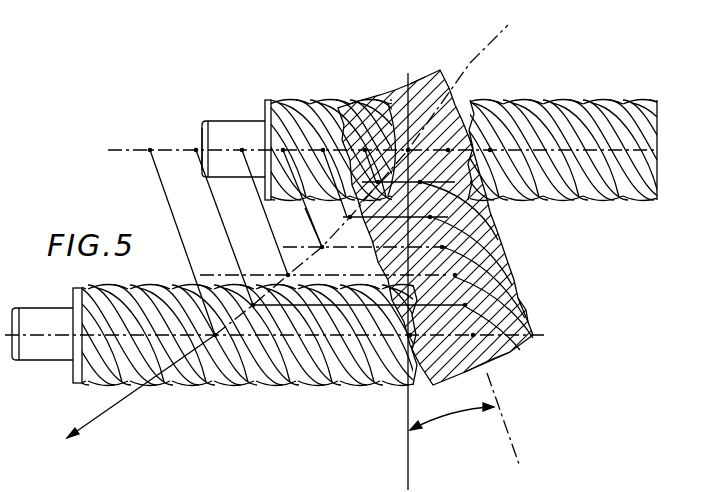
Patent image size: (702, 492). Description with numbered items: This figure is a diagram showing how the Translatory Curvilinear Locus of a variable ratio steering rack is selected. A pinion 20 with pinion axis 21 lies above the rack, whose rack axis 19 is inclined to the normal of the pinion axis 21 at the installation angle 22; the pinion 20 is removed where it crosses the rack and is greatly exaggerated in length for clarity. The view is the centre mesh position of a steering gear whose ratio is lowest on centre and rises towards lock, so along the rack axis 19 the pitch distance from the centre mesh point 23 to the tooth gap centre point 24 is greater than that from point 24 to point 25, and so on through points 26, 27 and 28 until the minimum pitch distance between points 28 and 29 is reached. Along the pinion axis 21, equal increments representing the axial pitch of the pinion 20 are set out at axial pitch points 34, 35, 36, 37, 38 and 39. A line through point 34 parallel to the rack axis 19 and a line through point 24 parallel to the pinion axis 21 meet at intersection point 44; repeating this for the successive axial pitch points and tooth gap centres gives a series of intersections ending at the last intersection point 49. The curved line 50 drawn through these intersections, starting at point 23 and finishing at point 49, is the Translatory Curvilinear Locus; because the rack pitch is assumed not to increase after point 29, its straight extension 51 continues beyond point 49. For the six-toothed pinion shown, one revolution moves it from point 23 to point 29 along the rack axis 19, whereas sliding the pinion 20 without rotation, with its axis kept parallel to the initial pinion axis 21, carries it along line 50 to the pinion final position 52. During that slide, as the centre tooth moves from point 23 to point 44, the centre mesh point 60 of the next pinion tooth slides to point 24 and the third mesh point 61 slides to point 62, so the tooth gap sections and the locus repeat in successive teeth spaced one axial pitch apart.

The rack axis 19 is at (507, 422).
The pinion 20 is at (542, 121).
The pinion axis 21 is at (312, 117).
The installation angle 22 is at (457, 424).
The centre mesh point 23 is at (361, 208).
The tooth gap centre point 24 is at (500, 228).
The tooth gap centre point 25 is at (505, 248).
The tooth gap centre point 26 is at (515, 275).
The tooth gap centre point 27 is at (508, 297).
The tooth gap centre point 28 is at (530, 314).
The tooth gap centre point 29 is at (495, 352).
The axial pitch point 34 is at (356, 120).
The axial pitch point 35 is at (307, 107).
The axial pitch point 36 is at (260, 192).
The axial pitch point 37 is at (232, 122).
The axial pitch point 38 is at (196, 150).
The axial pitch point 39 is at (130, 150).
The intersection point 44 is at (345, 218).
The last intersection point 49 is at (248, 364).
The Translatory Curvilinear Locus 50 is at (283, 275).
The straight extension 51 is at (108, 413).
The pinion final position 52 is at (35, 360).
The centre mesh point of adjacent pinion tooth 60 is at (421, 80).
The third mesh point 61 is at (490, 148).
The third tooth gap point 62 is at (492, 210).